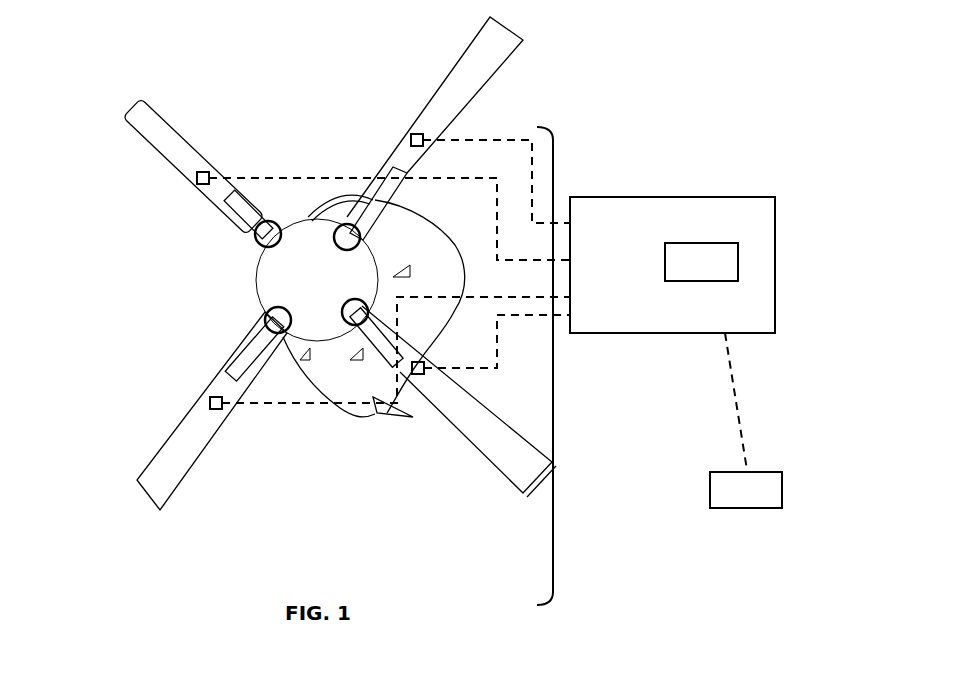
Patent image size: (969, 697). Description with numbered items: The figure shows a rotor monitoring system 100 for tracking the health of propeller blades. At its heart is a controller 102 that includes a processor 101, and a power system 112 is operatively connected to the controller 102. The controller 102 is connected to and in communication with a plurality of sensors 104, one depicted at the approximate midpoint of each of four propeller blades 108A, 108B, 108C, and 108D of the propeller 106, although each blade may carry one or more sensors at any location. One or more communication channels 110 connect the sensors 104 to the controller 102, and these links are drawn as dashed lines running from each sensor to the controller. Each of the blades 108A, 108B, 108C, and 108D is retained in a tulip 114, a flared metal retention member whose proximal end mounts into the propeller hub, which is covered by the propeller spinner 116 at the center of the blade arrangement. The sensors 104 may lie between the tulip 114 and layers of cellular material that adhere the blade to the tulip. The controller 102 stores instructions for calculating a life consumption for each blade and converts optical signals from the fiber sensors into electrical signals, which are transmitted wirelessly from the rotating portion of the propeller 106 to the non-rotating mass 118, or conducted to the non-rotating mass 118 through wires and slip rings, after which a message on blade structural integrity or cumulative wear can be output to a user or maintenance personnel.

The rotor monitoring system 100 is at (640, 100).
The processor 101 is at (698, 252).
The controller 102 is at (697, 338).
The sensors 104 is at (195, 180).
The propeller 106 is at (557, 363).
The propeller blade 108A is at (153, 132).
The propeller blade 108B is at (470, 73).
The propeller blade 108C is at (147, 486).
The propeller blade 108D is at (500, 472).
The communication channels 110 is at (315, 407).
The power system 112 is at (718, 510).
The tulip 114 is at (266, 315).
The propeller spinner 116 is at (262, 268).
The non-rotating mass 118 is at (433, 240).